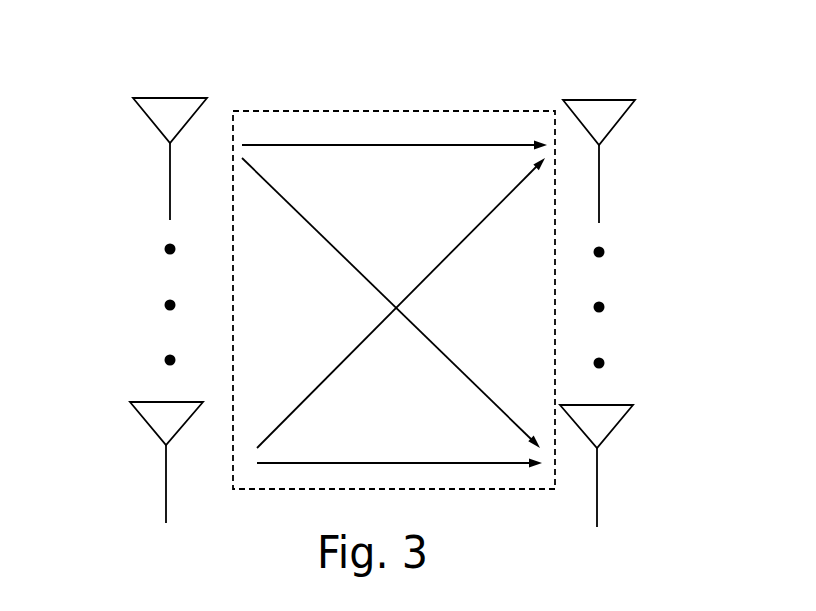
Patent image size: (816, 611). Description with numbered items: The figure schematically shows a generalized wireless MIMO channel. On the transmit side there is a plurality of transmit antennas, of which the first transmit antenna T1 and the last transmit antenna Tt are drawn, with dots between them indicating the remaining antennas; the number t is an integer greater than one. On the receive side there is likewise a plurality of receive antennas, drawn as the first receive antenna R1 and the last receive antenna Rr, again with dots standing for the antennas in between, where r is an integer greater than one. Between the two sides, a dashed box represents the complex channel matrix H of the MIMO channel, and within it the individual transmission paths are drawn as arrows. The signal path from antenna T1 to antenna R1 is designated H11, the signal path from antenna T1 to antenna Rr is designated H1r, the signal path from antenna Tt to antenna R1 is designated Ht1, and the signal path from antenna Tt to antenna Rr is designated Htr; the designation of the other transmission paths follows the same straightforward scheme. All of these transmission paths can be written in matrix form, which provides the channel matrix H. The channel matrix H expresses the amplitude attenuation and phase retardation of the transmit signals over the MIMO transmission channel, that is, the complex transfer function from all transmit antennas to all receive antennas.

The first transmit antenna T1 is at (128, 159).
The t-th transmit antenna Tt is at (128, 462).
The first receive antenna R1 is at (631, 161).
The r-th receive antenna Rr is at (628, 466).
The complex channel matrix H is at (472, 111).
The signal path from antenna T1 to antenna R1 H11 is at (394, 172).
The signal path from antenna T1 to antenna Rr H1r is at (391, 303).
The signal path from antenna Tt to antenna R1 Ht1 is at (401, 303).
The signal path from antenna Tt to antenna Rr Htr is at (399, 437).